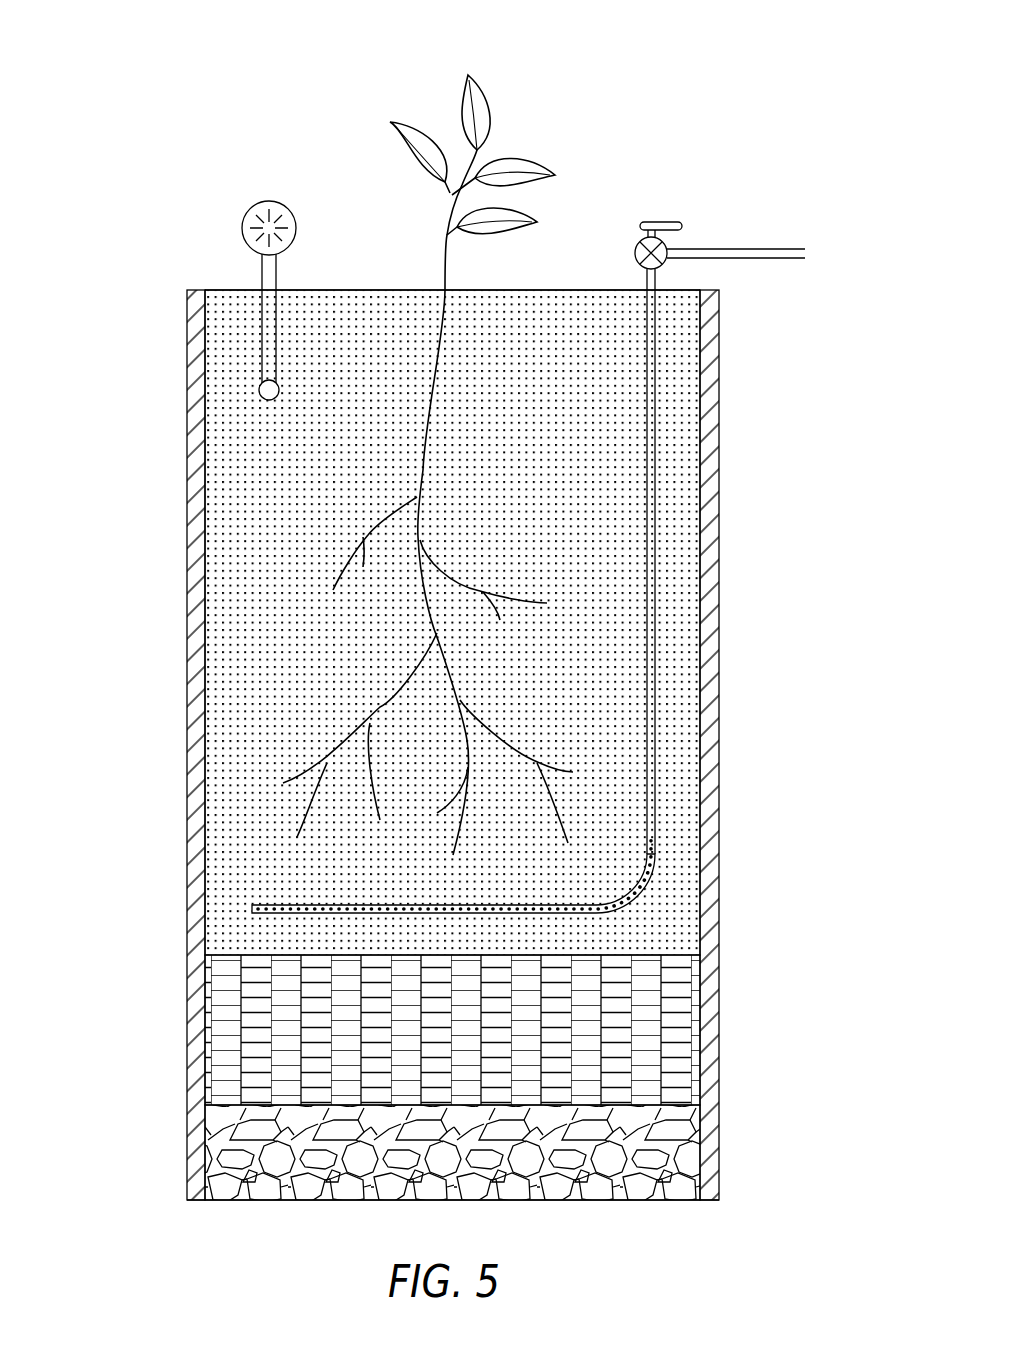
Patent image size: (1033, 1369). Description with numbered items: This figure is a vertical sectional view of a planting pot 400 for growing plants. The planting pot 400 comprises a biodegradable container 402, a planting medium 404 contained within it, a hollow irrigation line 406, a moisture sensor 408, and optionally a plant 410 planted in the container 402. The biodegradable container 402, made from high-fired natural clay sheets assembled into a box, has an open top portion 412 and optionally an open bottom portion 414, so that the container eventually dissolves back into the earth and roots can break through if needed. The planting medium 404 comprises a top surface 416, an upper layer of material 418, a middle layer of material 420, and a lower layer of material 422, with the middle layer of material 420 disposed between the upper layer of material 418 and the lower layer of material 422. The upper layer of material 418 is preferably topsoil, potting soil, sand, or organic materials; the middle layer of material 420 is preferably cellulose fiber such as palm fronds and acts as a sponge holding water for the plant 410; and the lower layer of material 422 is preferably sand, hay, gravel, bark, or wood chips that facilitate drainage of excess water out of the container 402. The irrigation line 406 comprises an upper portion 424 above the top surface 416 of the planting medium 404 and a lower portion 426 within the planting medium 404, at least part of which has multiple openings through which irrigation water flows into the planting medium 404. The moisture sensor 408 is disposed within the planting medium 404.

The planting pot 400 is at (617, 72).
The biodegradable container 402 is at (708, 515).
The planting medium 404 is at (168, 933).
The hollow irrigation line 406 is at (688, 210).
The moisture sensor 408 is at (246, 205).
The plant 410 is at (495, 123).
The open top portion 412 is at (227, 277).
The open bottom portion 414 is at (231, 1222).
The top surface 416 is at (362, 290).
The upper layer of material 418 is at (238, 605).
The middle layer of material 420 is at (237, 1048).
The lower layer of material 422 is at (237, 1165).
The upper portion of irrigation line 424 is at (646, 280).
The lower portion of irrigation line 426 is at (303, 903).